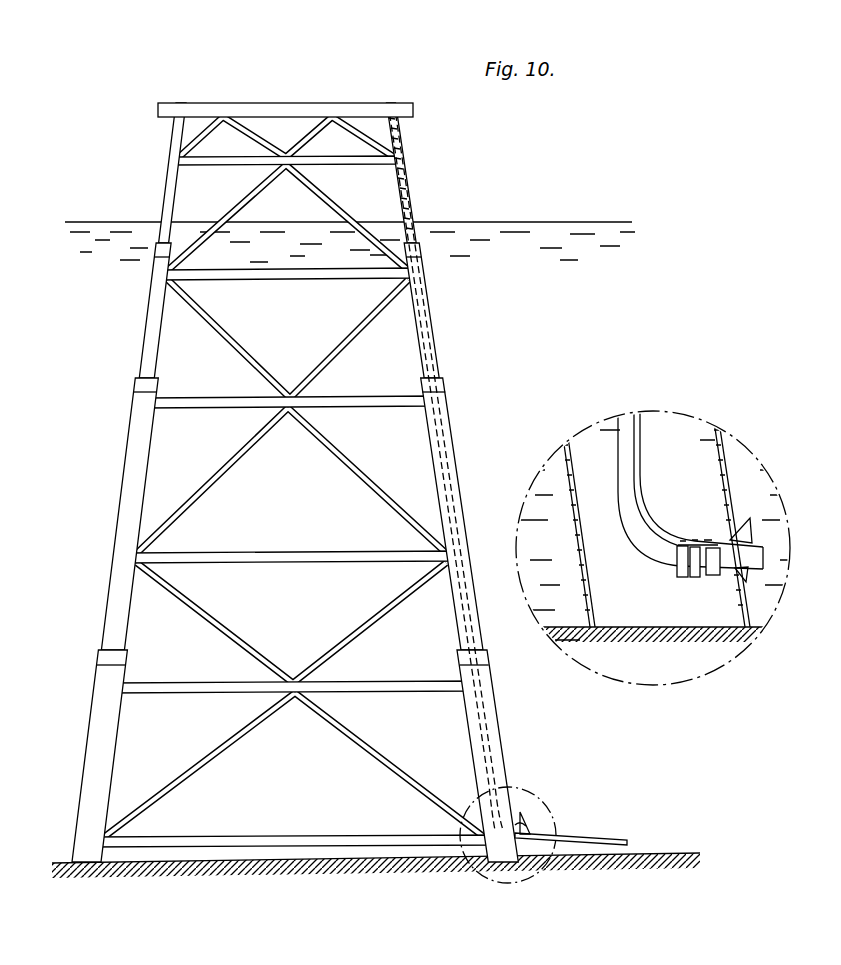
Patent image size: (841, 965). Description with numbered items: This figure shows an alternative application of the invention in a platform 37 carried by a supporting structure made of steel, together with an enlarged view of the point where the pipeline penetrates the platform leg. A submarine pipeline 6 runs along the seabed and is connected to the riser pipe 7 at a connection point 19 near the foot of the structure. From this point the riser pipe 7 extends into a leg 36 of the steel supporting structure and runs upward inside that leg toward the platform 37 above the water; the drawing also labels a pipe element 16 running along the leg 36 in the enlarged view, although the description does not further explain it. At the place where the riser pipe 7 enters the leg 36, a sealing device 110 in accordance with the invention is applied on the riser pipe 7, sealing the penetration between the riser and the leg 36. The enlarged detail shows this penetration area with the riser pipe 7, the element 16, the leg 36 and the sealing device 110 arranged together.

In FIG. 10, the platform 37 is at (336, 112).
In FIG. 10, the leg 36 is at (429, 311).
In FIG. 10a, the leg 36 is at (716, 474).
In FIG. 10, the pipe riser 16 is at (447, 401).
In FIG. 10a, the pipe riser 16 is at (632, 470).
In FIG. 10, the riser pipe 7 is at (533, 804).
In FIG. 10a, the riser pipe 7 is at (756, 541).
In FIG. 10, the point 19 is at (545, 830).
In FIG. 10, the submarine pipeline 6 is at (612, 838).
In FIG. 10a, the sealing device 110 is at (700, 578).